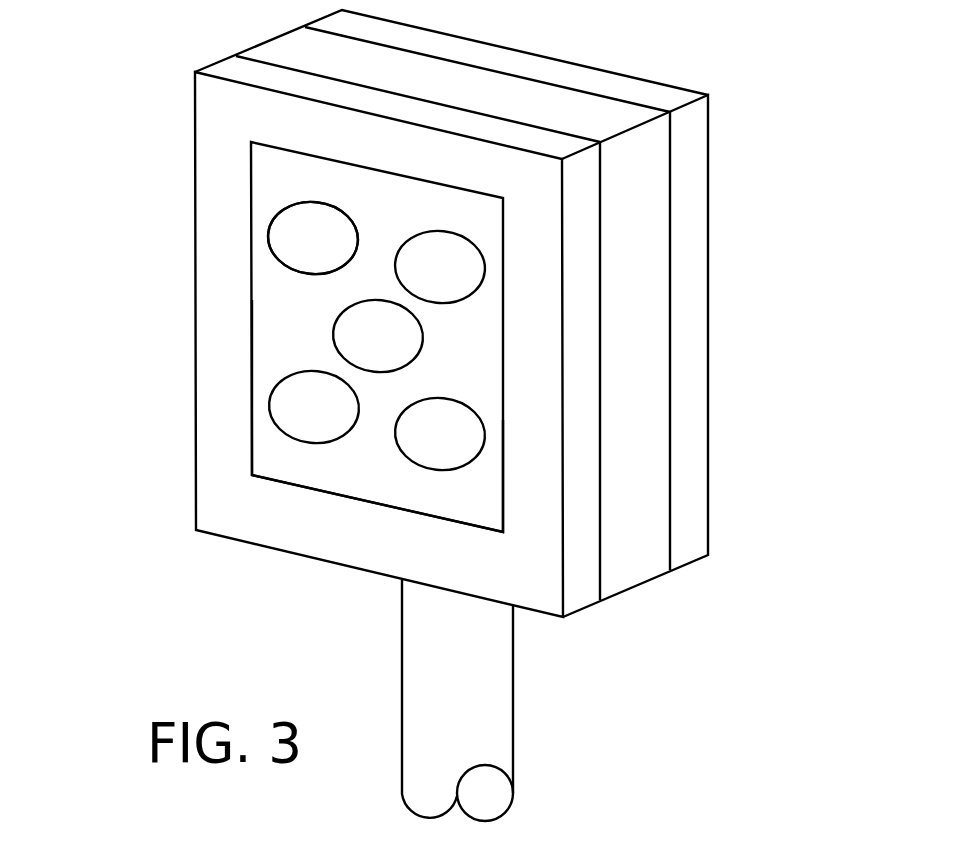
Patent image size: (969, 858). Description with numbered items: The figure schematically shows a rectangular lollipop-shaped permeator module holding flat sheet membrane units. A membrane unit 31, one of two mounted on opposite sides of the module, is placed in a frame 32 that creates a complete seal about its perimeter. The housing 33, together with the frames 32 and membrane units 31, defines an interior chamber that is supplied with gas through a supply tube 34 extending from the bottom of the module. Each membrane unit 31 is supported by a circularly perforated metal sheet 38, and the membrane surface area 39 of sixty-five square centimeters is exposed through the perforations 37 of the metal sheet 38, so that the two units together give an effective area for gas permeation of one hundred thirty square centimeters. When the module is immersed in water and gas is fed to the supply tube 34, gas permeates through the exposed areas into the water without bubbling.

The membrane unit 31 is at (270, 180).
The frame 32 is at (210, 484).
The housing 33 is at (285, 51).
The supply tube 34 is at (513, 748).
The perforations 37 is at (280, 262).
The metal sheet 38 is at (268, 353).
The surface area 39 is at (295, 230).